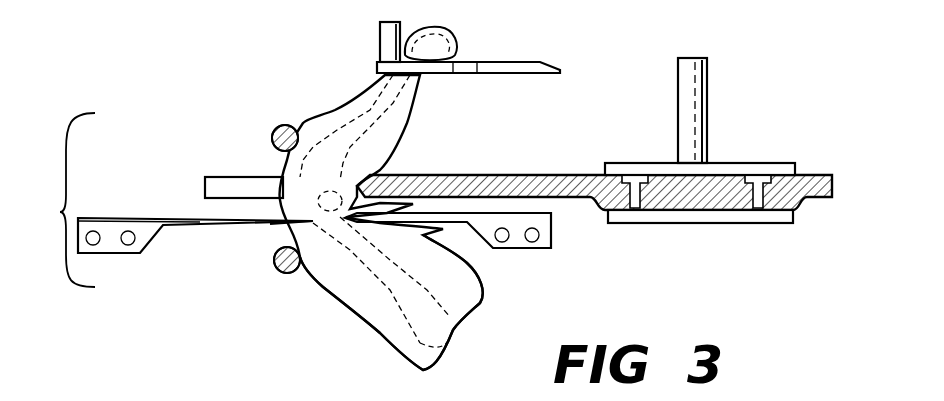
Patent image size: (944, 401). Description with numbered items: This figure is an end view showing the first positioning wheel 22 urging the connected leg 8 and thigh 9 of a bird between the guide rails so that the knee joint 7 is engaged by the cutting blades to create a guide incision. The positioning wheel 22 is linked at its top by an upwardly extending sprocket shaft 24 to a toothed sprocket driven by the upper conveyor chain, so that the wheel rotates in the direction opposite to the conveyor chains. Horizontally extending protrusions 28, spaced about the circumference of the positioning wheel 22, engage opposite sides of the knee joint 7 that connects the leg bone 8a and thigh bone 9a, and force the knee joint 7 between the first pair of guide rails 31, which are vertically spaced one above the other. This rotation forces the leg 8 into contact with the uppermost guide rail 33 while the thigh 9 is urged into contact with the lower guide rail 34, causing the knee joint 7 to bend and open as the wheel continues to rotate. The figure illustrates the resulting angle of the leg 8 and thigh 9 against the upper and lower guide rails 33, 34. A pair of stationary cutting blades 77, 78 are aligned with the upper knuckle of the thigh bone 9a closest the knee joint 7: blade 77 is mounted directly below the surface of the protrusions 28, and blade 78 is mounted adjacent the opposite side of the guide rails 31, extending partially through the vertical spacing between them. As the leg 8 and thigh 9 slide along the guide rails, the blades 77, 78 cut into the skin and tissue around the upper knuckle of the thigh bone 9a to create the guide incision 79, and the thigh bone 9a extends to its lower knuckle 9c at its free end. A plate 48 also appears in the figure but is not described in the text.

The knee joint 7 is at (303, 182).
The leg 8 is at (390, 143).
The leg bone 8a is at (377, 120).
The thigh 9 is at (468, 292).
The thigh bone 9a is at (380, 323).
The lower knuckle 9c is at (447, 342).
The first positioning wheel 22 is at (658, 140).
The sprocket shaft 24 is at (693, 120).
The protrusions 28 is at (442, 177).
The first pair of guide rails 31 is at (62, 200).
The upper guide rail 33 is at (280, 125).
The lower guide rail 34 is at (290, 273).
The top plate 48 is at (477, 65).
The cutting blade 77 is at (457, 220).
The cutting blade 78 is at (187, 223).
The guide incision 79 is at (281, 232).